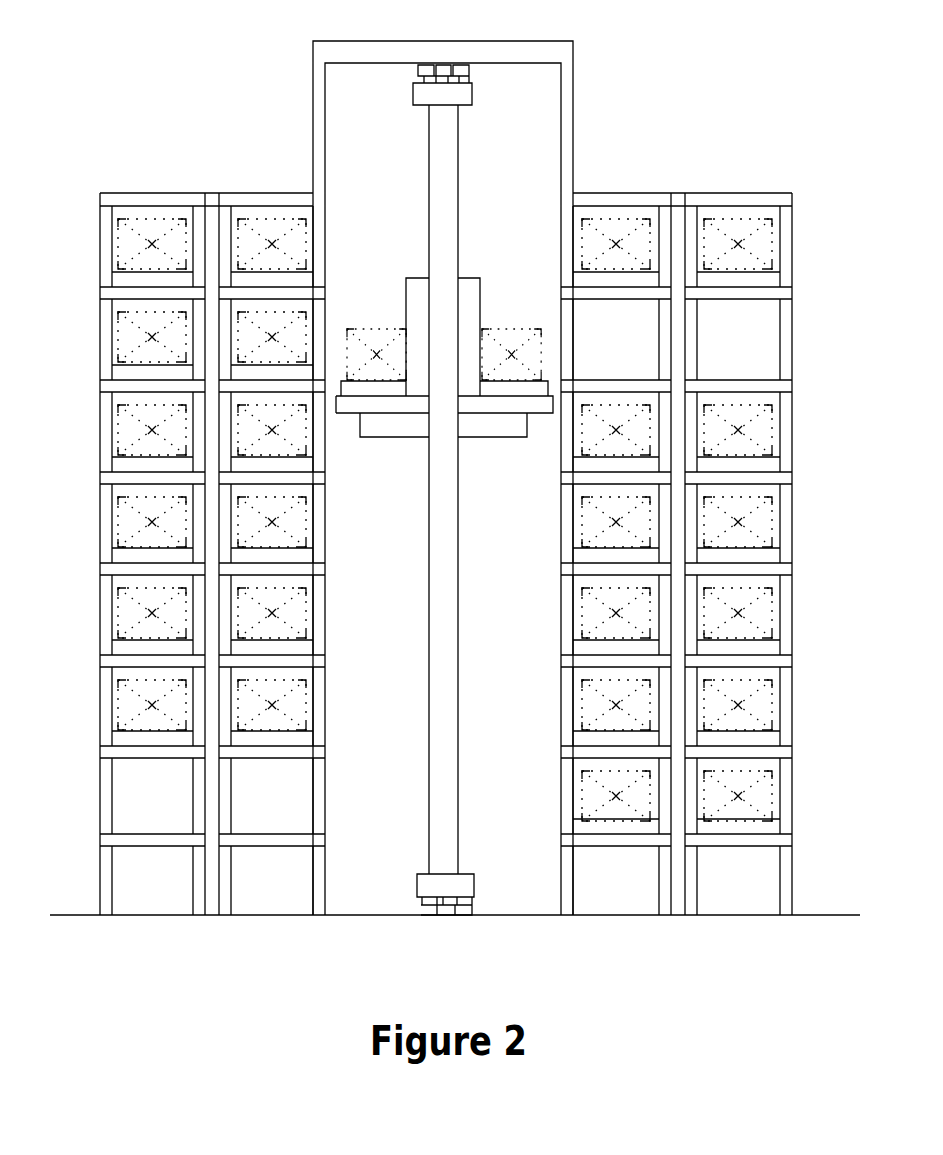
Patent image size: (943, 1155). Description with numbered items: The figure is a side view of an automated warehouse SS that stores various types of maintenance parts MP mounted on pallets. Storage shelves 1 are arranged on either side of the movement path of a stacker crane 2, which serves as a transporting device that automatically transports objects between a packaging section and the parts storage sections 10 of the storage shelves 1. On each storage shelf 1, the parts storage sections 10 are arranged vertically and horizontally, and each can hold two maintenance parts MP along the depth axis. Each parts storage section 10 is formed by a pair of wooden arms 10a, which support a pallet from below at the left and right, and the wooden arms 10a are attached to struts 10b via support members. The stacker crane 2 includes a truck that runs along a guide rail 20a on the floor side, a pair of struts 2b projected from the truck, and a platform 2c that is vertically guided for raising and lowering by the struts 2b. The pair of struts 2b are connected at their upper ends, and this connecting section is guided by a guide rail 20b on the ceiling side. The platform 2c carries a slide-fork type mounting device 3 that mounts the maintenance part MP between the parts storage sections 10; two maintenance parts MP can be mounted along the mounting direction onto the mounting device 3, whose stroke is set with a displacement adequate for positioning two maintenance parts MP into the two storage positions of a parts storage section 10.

The storage shelf 1 is at (473, 524).
The stacker crane 2 is at (443, 485).
The strut 2b is at (459, 622).
The platform 2c is at (489, 438).
The slide-fork type mounting device 3 is at (349, 414).
The parts storage section 10 is at (140, 809).
The wooden arm 10a is at (615, 847).
The strut 10b is at (326, 701).
The guide rail 20a is at (447, 917).
The guide rail 20b is at (443, 63).
The maintenance part MP is at (119, 428).
The automated warehouse SS is at (146, 186).